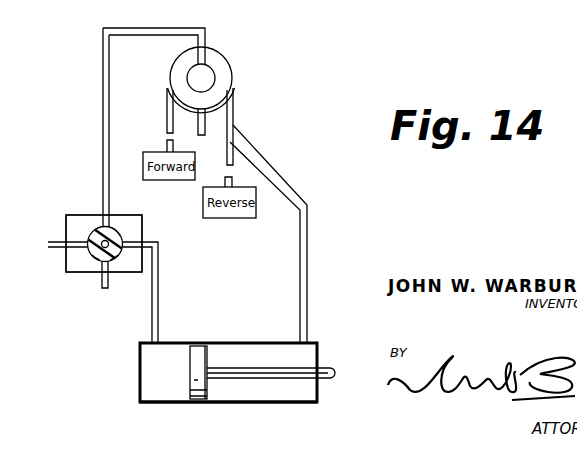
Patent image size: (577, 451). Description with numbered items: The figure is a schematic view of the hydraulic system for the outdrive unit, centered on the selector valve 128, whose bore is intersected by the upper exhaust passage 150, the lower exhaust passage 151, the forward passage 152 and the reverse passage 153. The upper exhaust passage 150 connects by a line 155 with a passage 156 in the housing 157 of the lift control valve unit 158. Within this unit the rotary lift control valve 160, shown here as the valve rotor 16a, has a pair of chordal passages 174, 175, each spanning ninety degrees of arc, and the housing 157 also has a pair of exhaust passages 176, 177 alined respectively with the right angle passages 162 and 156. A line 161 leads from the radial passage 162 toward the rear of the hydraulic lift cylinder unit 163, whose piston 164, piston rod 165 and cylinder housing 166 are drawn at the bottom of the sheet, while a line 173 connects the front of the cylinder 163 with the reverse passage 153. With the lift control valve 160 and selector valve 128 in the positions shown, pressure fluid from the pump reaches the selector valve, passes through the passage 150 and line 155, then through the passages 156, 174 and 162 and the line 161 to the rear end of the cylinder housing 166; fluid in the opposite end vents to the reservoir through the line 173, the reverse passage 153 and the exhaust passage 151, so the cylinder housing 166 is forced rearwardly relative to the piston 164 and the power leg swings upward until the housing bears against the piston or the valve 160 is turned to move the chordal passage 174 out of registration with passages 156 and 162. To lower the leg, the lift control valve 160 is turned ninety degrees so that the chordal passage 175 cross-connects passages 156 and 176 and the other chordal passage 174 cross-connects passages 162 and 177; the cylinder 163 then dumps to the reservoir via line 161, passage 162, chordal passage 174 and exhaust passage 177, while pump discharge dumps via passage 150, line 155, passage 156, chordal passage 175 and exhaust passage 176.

The upper exhaust passage 150 is at (206, 45).
The selector valve 128 is at (233, 77).
The forward passage 152 is at (166, 114).
The reverse passage 153 is at (234, 114).
The lower exhaust passage 151 is at (206, 127).
The line 155 is at (103, 113).
The line 173 is at (305, 290).
The valve rotor 16a is at (95, 228).
The passage 156 is at (101, 224).
The chordal passage 174 is at (112, 228).
The housing 157 is at (133, 232).
The exhaust passage 176 is at (58, 242).
The radial passage 162 is at (133, 250).
The lift control valve unit 158 is at (62, 267).
The chordal passage 175 is at (100, 258).
The lift control valve 160 is at (113, 254).
The line 161 is at (158, 298).
The exhaust passage 177 is at (106, 297).
The hydraulic lift cylinder unit 163 is at (138, 368).
The piston 164 is at (200, 360).
The piston rod 165 is at (322, 366).
The cylinder housing 166 is at (238, 403).